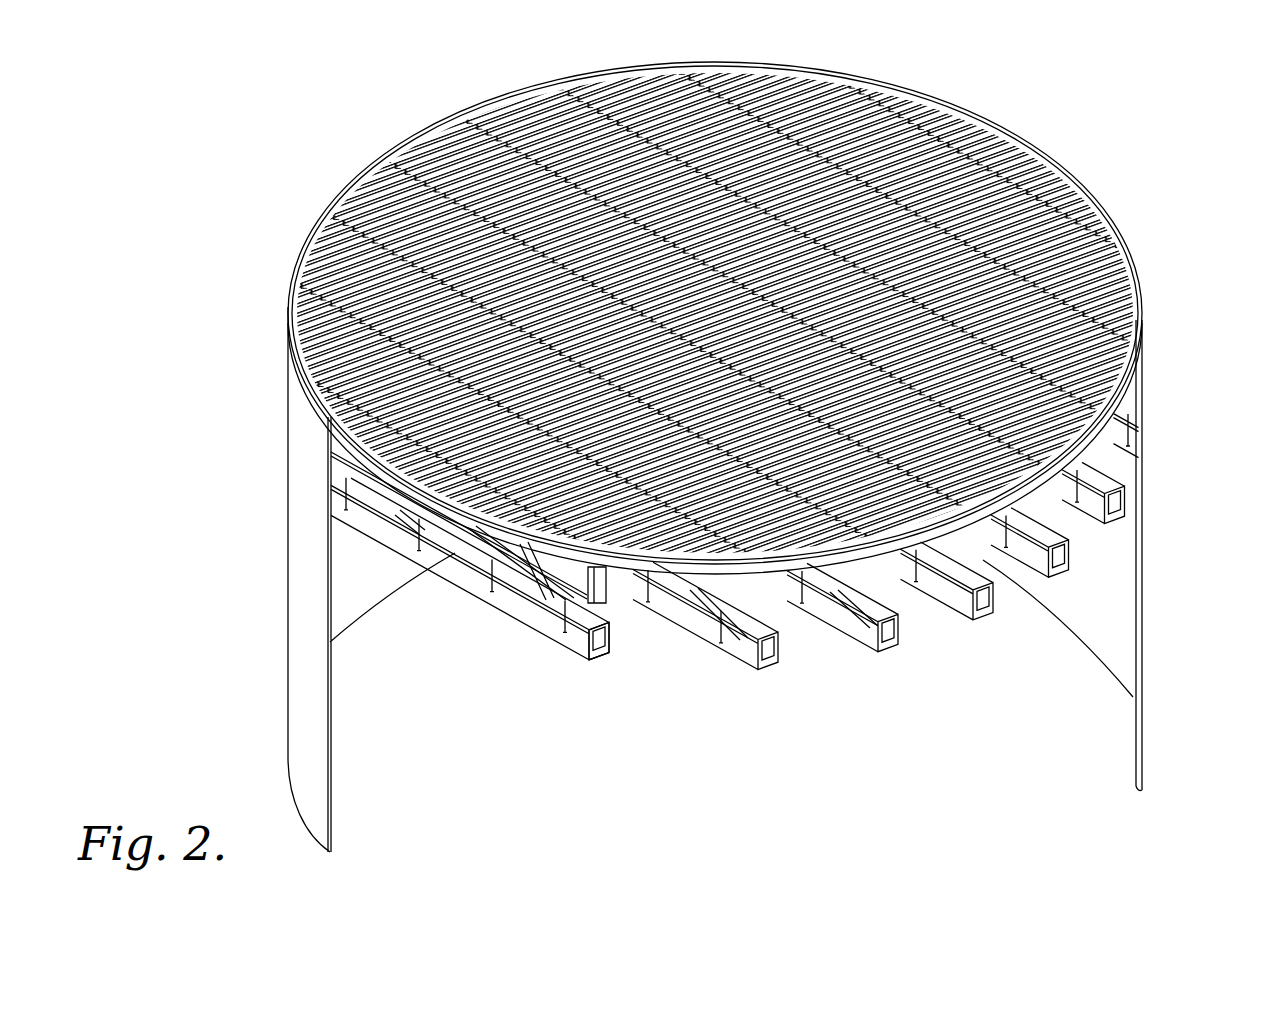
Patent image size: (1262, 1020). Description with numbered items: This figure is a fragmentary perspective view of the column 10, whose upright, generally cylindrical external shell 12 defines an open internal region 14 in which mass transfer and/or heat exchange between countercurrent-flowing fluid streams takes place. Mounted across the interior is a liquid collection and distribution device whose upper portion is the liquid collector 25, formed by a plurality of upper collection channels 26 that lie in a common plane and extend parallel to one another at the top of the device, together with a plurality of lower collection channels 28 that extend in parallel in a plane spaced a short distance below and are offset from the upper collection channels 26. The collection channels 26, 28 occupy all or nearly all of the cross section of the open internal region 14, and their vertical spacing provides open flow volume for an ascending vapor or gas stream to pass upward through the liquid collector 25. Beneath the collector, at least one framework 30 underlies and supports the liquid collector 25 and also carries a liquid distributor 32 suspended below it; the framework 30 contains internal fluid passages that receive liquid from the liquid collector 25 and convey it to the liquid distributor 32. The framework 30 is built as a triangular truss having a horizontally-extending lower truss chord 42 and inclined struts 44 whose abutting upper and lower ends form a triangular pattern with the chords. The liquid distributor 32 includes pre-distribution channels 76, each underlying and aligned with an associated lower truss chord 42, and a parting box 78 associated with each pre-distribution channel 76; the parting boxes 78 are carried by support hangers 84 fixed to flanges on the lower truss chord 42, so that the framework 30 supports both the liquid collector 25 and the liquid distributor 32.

The column 10 is at (1152, 506).
The external shell 12 is at (1140, 650).
The open internal region 14 is at (1110, 565).
The liquid collector 25 is at (1073, 168).
The upper collection channels 26 is at (340, 437).
The lower collection channels 28 is at (335, 478).
The framework 30 is at (476, 548).
The liquid distributor 32 is at (520, 636).
The lower truss chord 42 is at (600, 625).
The inclined struts 44 is at (412, 530).
The pre-distribution channels 76 is at (598, 646).
The parting box 78 is at (591, 660).
The support hangers 84 is at (345, 522).